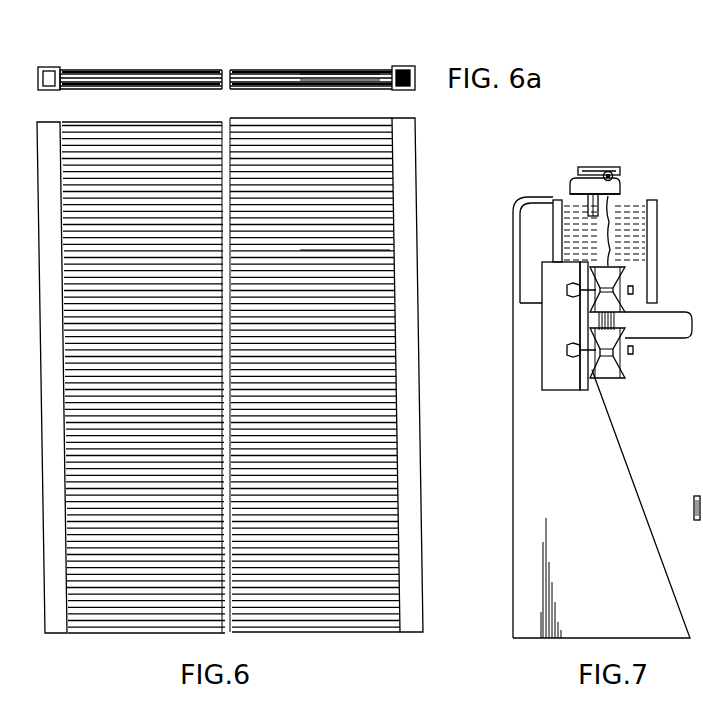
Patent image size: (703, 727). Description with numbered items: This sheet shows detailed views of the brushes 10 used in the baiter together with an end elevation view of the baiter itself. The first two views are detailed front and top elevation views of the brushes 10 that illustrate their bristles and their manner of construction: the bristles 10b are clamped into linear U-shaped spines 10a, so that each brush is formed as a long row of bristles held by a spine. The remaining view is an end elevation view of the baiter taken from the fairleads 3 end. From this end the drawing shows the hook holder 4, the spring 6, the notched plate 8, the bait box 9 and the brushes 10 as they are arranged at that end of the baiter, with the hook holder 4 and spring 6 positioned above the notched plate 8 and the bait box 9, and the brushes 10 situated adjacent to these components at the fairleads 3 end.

In FIG. 6A, the brushes 10 is at (420, 70).
In FIG. 6, the brushes 10 is at (417, 186).
In FIG. 7, the brushes 10 is at (633, 212).
In FIG. 6, the linear U-shaped spines 10a is at (380, 262).
In FIG. 6A, the bristles 10b is at (303, 70).
In FIG. 7, the fairleads 3 is at (622, 372).
In FIG. 7, the hook holder 4 is at (614, 178).
In FIG. 7, the spring 6 is at (600, 168).
In FIG. 7, the notched plate 8 is at (572, 190).
In FIG. 7, the bait box 9 is at (659, 257).